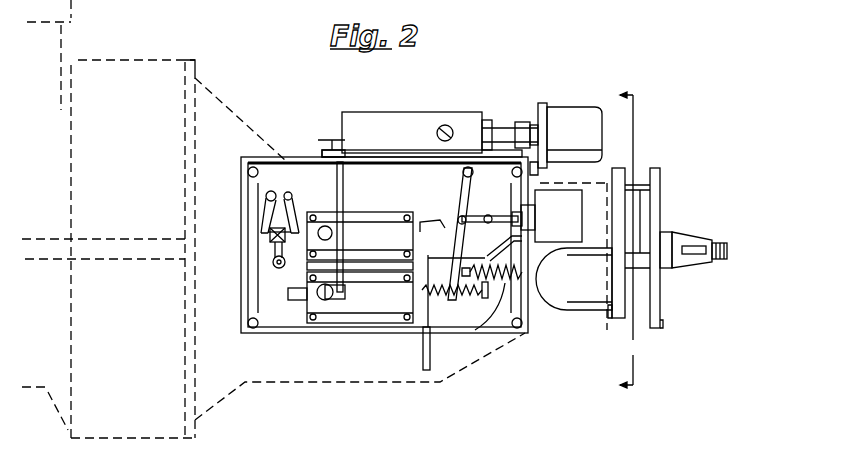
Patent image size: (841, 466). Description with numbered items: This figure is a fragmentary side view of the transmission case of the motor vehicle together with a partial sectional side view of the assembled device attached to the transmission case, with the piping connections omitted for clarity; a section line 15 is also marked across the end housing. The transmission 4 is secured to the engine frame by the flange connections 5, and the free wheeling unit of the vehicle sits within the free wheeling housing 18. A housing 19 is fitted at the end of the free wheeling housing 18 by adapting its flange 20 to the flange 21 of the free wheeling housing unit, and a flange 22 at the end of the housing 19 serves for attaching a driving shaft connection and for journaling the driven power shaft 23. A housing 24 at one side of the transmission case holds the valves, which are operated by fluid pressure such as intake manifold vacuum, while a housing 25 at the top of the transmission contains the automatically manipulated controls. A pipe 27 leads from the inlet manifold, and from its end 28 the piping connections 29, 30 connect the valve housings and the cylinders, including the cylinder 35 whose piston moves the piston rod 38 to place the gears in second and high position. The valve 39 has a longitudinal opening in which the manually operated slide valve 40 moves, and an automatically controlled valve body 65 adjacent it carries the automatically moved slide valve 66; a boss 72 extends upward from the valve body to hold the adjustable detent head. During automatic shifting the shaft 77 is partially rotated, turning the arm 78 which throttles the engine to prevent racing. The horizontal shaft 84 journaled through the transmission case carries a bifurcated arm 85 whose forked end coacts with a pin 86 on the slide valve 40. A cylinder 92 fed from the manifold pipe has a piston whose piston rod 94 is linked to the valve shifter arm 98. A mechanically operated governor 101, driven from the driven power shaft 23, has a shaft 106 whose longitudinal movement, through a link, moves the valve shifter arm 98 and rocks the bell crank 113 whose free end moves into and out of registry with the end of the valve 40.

The transmission 4 is at (244, 90).
The flange connections 5 is at (192, 70).
The section line 15- 15 is at (642, 242).
The free wheeling housing 18 is at (590, 192).
The housing 19 is at (660, 175).
The flange 20 is at (640, 180).
The flange 21 is at (625, 175).
The flange 22 is at (660, 196).
The driven power shaft 23 is at (678, 237).
The housing 24 is at (328, 328).
The housing 25 is at (385, 122).
The pipe 27 is at (432, 353).
The end of the pipe 28 is at (425, 322).
The piping connection 29 is at (420, 280).
The piping connection 30 is at (495, 250).
The cylinder 35 is at (562, 118).
The piston rod 38 is at (503, 127).
The valve 39 is at (372, 230).
The slide valve 40 is at (303, 228).
The automatically controlled valve body 65 is at (368, 315).
The slide valve 66 is at (296, 305).
The boss 72 is at (330, 305).
The shaft 77 is at (343, 190).
The arm 78 is at (330, 138).
The shaft 84 is at (275, 268).
The bifurcated arm 85 is at (270, 252).
The pin 86 is at (263, 236).
The cylinder 92 is at (563, 245).
The piston rod 94 is at (562, 216).
The valve shifter arm 98 is at (480, 200).
The mechanically operated governor 101 is at (583, 300).
The governor shaft 106 is at (505, 300).
The bell crank 113 is at (455, 222).